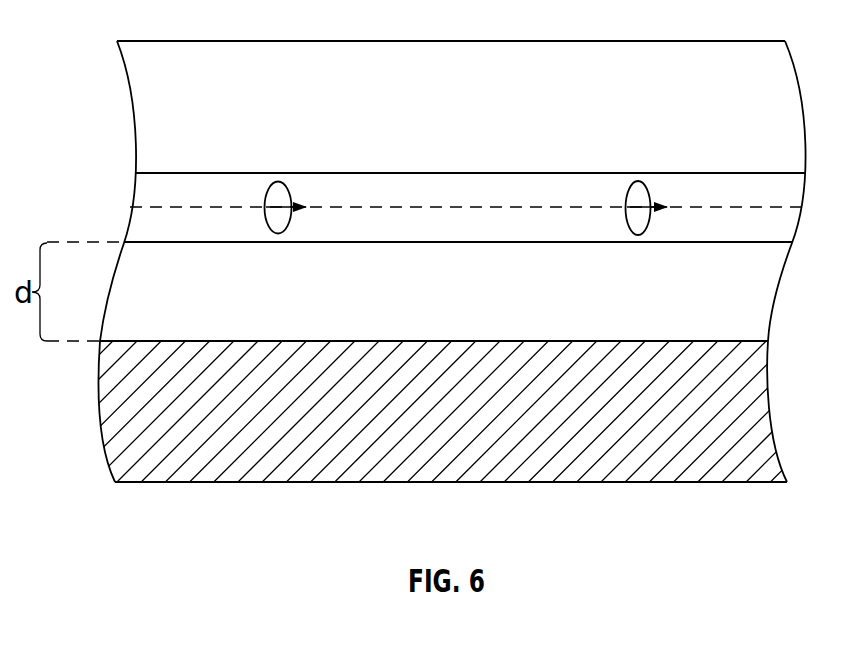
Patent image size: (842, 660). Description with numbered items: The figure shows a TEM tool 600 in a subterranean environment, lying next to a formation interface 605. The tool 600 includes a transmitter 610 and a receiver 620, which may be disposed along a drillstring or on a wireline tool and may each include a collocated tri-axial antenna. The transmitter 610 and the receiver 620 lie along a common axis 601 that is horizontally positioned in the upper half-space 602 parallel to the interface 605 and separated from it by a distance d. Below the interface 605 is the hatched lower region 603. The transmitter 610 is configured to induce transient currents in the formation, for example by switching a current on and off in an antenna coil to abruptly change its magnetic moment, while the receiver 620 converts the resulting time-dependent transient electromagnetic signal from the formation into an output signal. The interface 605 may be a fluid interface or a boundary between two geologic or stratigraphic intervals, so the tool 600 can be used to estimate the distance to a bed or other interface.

The TEM tool 600 is at (510, 154).
The common axis 601 is at (707, 211).
The upper half-space 602 is at (212, 57).
The substrate 603 is at (310, 467).
The formation interface 605 is at (685, 341).
The transmitter 610 is at (277, 181).
The receiver 620 is at (638, 182).